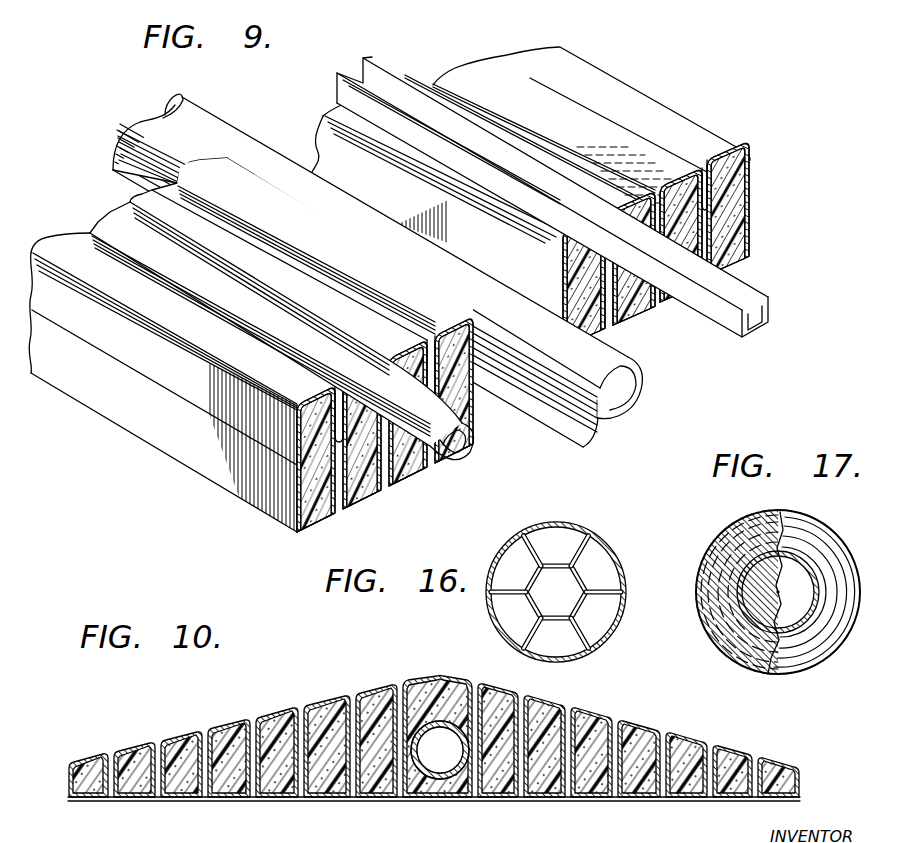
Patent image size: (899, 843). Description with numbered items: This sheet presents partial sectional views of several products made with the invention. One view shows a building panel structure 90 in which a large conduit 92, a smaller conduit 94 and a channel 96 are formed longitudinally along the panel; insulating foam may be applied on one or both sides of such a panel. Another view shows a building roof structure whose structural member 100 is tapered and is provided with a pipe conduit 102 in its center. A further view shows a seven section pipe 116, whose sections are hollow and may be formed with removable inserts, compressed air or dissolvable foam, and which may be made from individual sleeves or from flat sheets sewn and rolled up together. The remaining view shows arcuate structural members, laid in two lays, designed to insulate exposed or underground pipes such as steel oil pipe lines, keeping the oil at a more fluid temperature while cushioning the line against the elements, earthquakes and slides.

In FIG. 9, the building panel structure 90 is at (130, 403).
In FIG. 9, the large conduit 92 is at (547, 315).
In FIG. 9, the smaller conduit 94 is at (416, 458).
In FIG. 9, the channel 96 is at (750, 293).
In FIG. 10, the structural member 100 is at (597, 783).
In FIG. 10, the pipe conduit 102 is at (440, 790).
In FIG. 16, the seven section pipe 116 is at (603, 538).